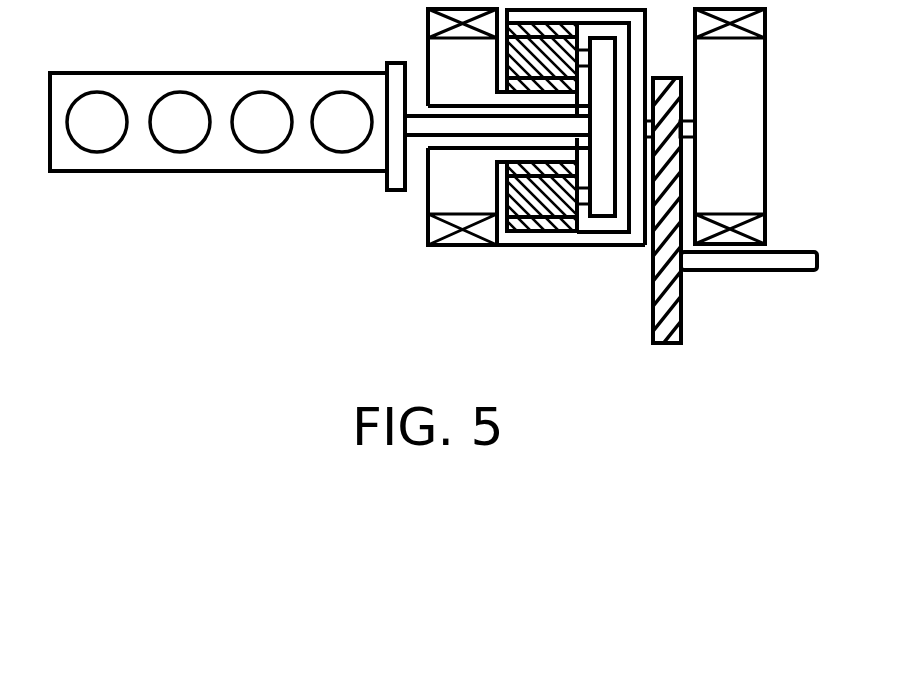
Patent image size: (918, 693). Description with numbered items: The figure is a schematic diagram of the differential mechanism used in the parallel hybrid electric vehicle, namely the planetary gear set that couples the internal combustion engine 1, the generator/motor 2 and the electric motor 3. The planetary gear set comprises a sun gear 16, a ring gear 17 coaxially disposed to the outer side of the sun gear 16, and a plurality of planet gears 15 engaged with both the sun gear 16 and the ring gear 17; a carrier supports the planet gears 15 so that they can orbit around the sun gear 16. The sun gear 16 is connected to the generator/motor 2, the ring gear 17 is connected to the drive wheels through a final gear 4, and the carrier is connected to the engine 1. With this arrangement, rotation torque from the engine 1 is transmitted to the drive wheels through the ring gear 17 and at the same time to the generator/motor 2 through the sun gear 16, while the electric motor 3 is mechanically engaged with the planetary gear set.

The internal combustion engine 1 is at (163, 172).
The generator/motor 2 is at (428, 221).
The electric motor 3 is at (768, 74).
The final gear 4 is at (663, 340).
The planet gears 15 is at (524, 196).
The sun gear 16 is at (558, 215).
The ring gear 17 is at (541, 226).